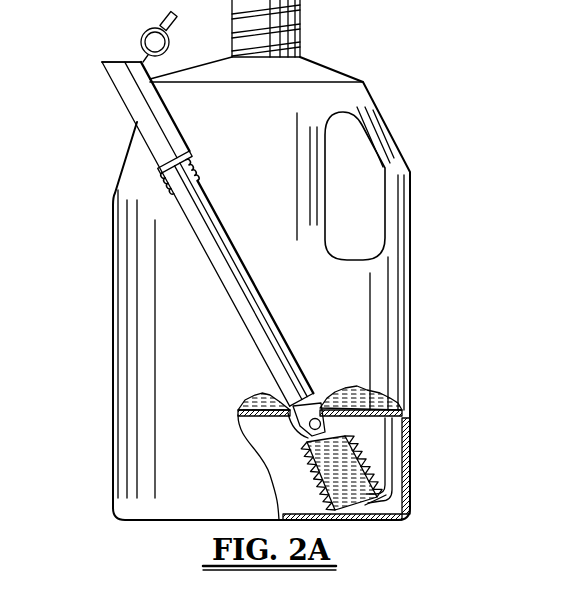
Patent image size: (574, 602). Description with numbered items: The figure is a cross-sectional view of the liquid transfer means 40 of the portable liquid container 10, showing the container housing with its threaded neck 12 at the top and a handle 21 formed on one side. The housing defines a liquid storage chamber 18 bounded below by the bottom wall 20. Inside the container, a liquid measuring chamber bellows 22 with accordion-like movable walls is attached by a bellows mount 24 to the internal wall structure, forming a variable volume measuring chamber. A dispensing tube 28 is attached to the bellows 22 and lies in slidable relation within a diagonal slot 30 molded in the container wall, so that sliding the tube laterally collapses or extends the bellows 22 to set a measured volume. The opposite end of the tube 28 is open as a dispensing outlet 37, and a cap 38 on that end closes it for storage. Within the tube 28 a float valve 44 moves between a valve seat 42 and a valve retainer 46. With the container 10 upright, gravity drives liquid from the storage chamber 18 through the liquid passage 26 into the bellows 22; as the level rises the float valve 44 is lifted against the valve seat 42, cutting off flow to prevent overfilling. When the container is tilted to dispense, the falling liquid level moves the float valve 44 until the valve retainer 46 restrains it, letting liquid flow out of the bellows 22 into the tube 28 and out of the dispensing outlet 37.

The portable liquid container 10 is at (437, 126).
The threaded neck 12 is at (298, 40).
The liquid storage chamber 18 is at (363, 381).
The bottom wall 20 is at (265, 400).
The handle 21 is at (386, 228).
The liquid measuring chamber bellows 22 is at (310, 500).
The bellows mount 24 is at (395, 520).
The liquid passage 26 is at (397, 462).
The dispensing tube 28 is at (246, 302).
The diagonal slot 30 is at (220, 278).
The dispensing outlet 37 is at (117, 62).
The cap 38 is at (150, 28).
The liquid transfer means 40 is at (404, 422).
The valve seat 42 is at (300, 420).
The float valve 44 is at (307, 427).
The valve retainer 46 is at (313, 447).